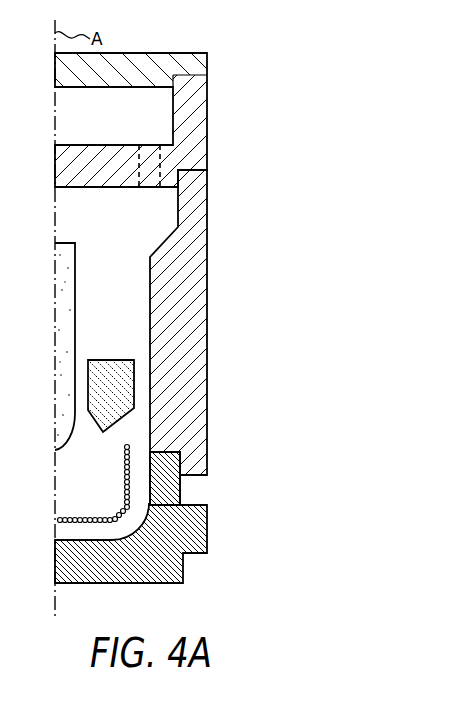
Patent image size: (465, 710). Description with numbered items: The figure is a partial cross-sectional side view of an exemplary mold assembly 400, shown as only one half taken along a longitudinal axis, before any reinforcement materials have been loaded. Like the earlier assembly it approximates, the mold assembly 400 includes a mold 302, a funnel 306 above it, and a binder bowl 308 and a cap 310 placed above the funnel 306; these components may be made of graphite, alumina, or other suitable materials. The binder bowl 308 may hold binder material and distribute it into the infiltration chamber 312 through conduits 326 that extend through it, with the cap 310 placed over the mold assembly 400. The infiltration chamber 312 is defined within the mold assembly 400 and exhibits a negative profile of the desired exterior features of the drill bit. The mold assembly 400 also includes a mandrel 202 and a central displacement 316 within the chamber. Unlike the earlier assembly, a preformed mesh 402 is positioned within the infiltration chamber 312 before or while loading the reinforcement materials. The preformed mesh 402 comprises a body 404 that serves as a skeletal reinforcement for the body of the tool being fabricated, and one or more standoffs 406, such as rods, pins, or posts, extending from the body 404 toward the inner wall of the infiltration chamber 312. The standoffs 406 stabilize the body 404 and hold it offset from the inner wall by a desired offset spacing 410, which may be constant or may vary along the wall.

The mold assembly 400 is at (236, 78).
The binder bowl 308 is at (207, 117).
The cap 310 is at (131, 53).
The conduits 326 is at (147, 155).
The infiltration chamber 312 is at (127, 225).
The central displacement 316 is at (75, 272).
The funnel 306 is at (207, 317).
The mandrel 202 is at (127, 406).
The mold 302 is at (207, 525).
The body 404 is at (132, 488).
The standoffs 406 is at (143, 506).
The preformed mesh 402 is at (124, 527).
The offset spacing 410 is at (68, 575).